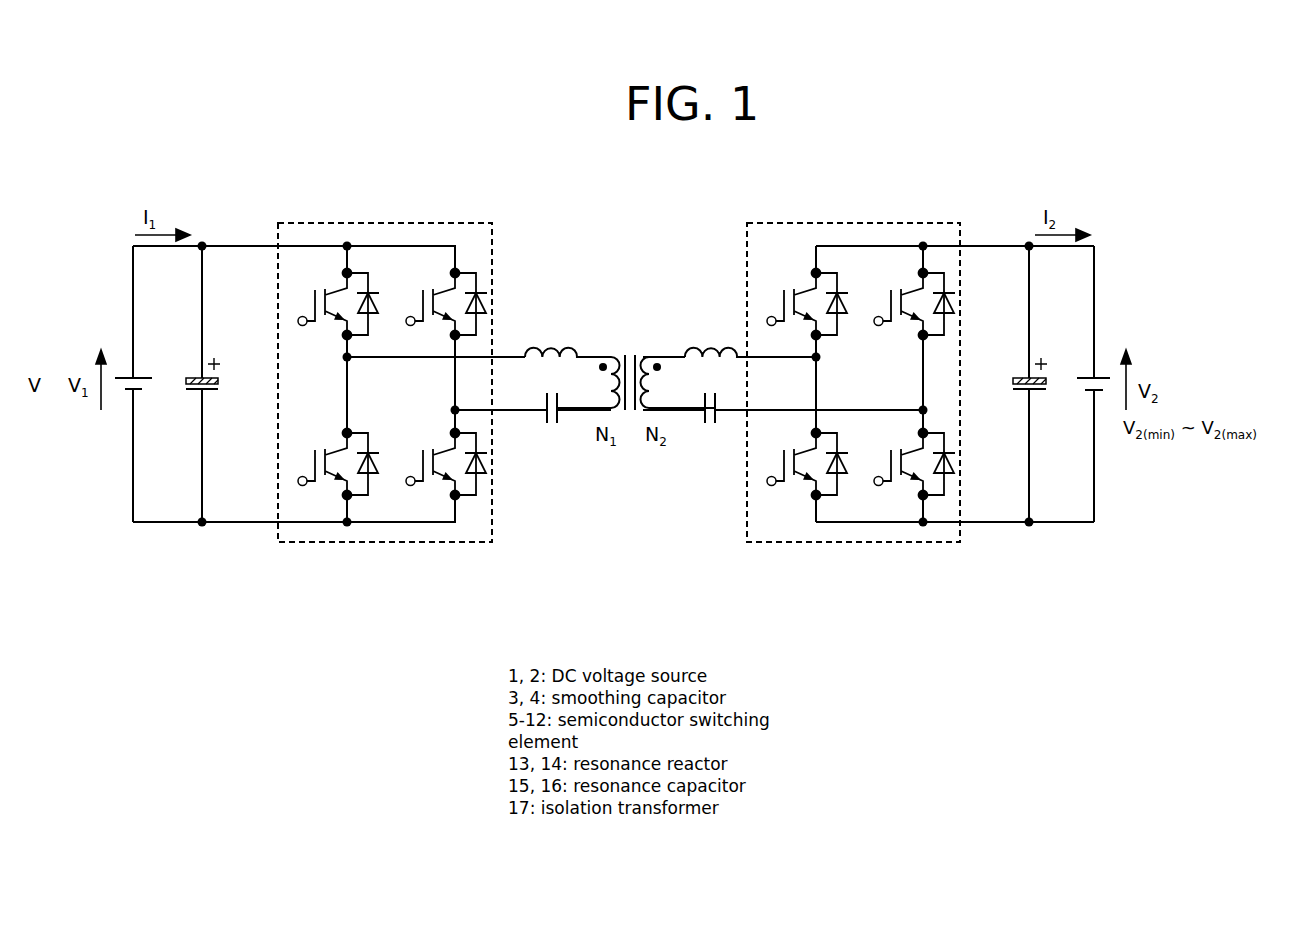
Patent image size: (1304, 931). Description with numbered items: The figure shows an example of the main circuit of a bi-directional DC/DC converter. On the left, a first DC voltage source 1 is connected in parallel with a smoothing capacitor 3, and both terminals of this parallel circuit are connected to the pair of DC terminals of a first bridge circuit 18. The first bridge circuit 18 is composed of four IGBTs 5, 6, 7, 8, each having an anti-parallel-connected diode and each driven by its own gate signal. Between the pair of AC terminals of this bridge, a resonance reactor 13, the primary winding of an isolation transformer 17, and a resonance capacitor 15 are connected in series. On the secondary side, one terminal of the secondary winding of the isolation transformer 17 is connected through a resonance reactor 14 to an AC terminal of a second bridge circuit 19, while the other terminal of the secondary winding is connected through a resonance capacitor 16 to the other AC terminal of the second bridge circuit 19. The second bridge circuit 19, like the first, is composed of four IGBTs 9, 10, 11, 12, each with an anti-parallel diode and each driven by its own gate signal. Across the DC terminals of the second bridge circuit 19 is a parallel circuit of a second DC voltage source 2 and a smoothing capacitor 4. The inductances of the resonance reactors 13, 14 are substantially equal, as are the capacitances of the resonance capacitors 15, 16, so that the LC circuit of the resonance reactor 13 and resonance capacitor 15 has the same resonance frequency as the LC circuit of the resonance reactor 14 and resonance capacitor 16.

The first DC voltage source 1 is at (138, 375).
The second DC voltage source 2 is at (1086, 375).
The smoothing capacitor 3 is at (218, 378).
The smoothing capacitor 4 is at (1020, 376).
The IGBT 5 is at (332, 285).
The IGBT 6 is at (334, 445).
The IGBT 7 is at (440, 285).
The IGBT 8 is at (441, 447).
The IGBT 9 is at (806, 288).
The IGBT 10 is at (809, 446).
The IGBT 11 is at (912, 290).
The IGBT 12 is at (917, 447).
The resonance reactor 13 is at (545, 344).
The resonance reactor 14 is at (710, 342).
The resonance capacitor 15 is at (554, 428).
The resonance capacitor 16 is at (708, 428).
The isolation transformer 17 is at (631, 350).
The first bridge circuit 18 is at (440, 223).
The second bridge circuit 19 is at (917, 223).